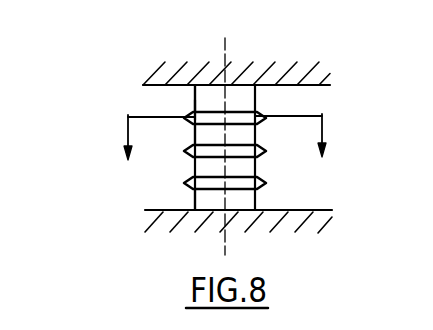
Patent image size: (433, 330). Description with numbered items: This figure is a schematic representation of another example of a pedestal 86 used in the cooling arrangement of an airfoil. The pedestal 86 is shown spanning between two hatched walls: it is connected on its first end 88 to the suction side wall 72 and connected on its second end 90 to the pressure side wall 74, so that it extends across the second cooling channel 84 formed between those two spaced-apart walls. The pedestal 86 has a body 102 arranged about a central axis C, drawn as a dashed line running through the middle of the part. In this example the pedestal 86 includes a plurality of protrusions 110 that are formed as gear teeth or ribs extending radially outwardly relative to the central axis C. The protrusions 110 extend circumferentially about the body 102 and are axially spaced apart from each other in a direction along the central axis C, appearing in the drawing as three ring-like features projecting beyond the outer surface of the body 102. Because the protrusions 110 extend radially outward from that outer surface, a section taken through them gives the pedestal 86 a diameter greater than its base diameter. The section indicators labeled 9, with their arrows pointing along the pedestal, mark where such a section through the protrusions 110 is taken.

The suction side wall 72 is at (283, 85).
The pressure side wall 74 is at (283, 212).
The second cooling channel 84 is at (112, 98).
The pedestal 86 is at (195, 137).
The first end 88 is at (195, 106).
The second end 90 is at (193, 199).
The body 102 is at (243, 168).
The protrusions 110 is at (263, 112).
The section line 9- 9 is at (226, 136).
The central axis C is at (223, 53).